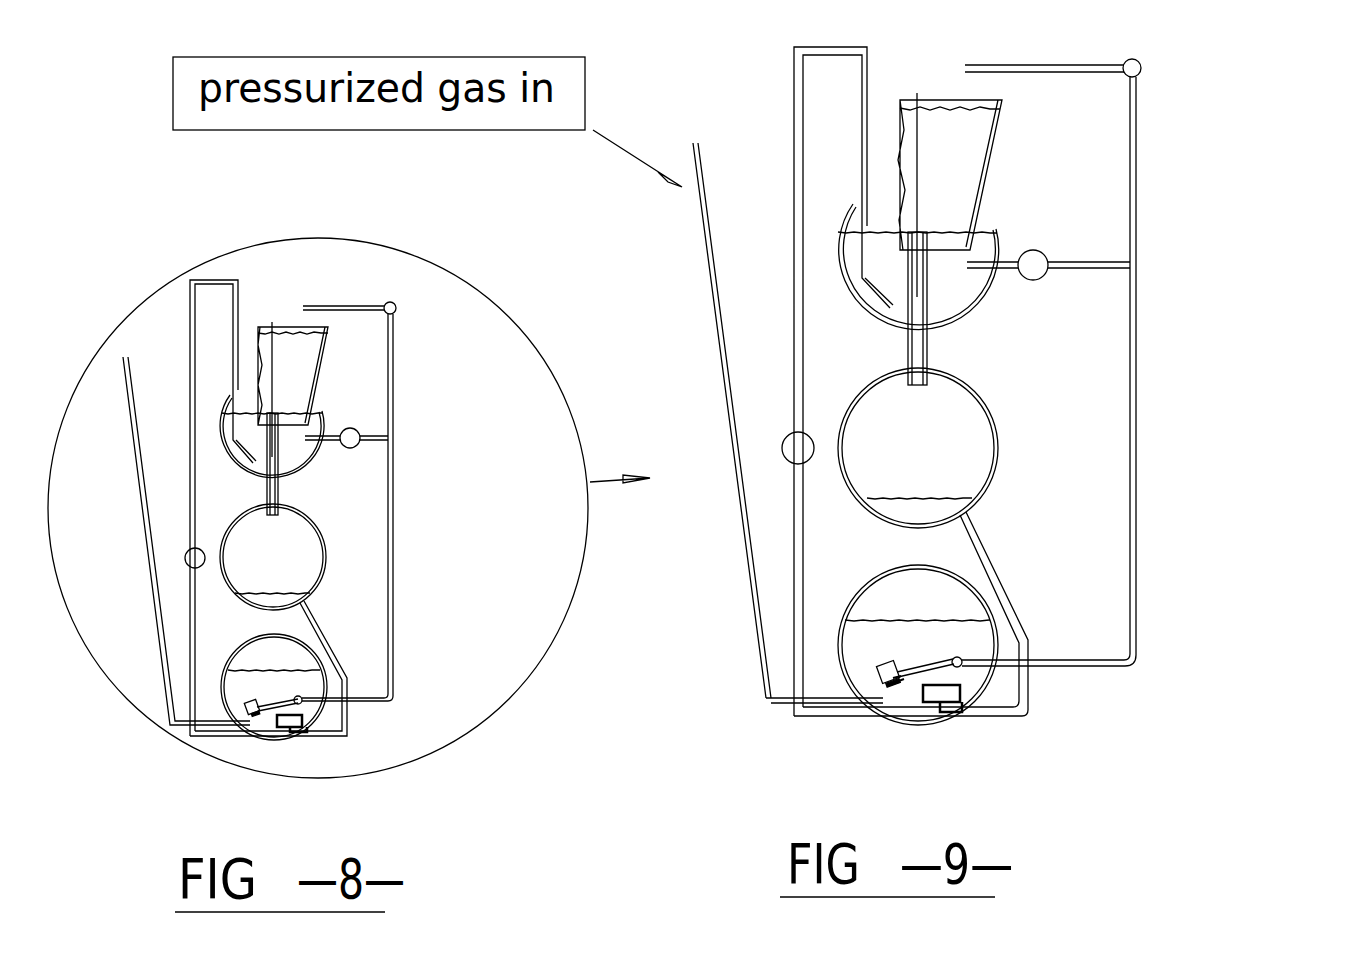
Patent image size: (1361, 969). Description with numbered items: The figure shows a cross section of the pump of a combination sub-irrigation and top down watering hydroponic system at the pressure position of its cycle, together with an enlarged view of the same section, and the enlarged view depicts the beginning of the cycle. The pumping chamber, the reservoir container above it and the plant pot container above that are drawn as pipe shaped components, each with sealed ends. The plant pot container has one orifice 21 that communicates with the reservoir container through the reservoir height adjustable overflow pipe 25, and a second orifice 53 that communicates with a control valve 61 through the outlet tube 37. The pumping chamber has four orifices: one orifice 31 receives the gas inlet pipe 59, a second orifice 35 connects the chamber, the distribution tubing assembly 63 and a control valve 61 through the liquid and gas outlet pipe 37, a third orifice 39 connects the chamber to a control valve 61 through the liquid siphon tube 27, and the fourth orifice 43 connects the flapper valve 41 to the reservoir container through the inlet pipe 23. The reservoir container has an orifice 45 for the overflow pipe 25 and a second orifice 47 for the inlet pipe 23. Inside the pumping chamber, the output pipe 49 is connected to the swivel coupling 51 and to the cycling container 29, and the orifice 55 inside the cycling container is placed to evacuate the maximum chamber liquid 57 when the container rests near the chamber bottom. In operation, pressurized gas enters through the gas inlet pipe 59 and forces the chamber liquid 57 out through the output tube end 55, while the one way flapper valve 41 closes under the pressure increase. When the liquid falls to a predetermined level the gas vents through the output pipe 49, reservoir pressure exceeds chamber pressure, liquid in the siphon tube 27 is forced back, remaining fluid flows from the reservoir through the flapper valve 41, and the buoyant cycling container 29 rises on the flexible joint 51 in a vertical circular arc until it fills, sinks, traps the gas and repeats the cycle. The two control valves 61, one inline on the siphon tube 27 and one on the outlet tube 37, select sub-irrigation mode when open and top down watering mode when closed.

The orifice 21 is at (927, 327).
The inlet pipe 23 is at (1013, 607).
The overflow pipe 25 is at (927, 350).
The liquid siphon tube 27 is at (795, 325).
The cycling container 29 is at (884, 652).
The orifice 31 is at (862, 700).
The orifice 35 is at (965, 659).
The outlet tube 37 is at (1140, 455).
The orifice 39 is at (882, 713).
The flapper valve 41 is at (930, 703).
The orifice 43 is at (963, 712).
The orifice 45 is at (930, 366).
The orifice 47 is at (970, 503).
The output pipe 49 is at (937, 666).
The swivel coupling 51 is at (963, 664).
The orifice 53 is at (1020, 258).
The orifice 55 is at (877, 670).
The chamber liquid 57 is at (905, 658).
The gas inlet pipe 59 is at (725, 395).
The control valve 61 is at (1049, 259).
The distribution tubing assembly 63 is at (1144, 76).